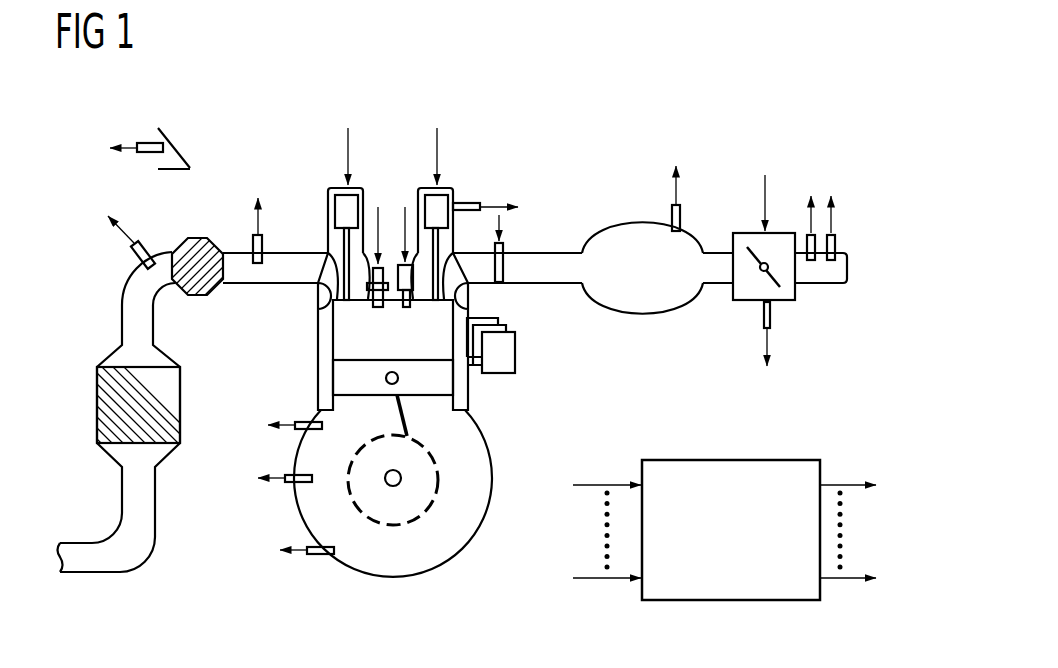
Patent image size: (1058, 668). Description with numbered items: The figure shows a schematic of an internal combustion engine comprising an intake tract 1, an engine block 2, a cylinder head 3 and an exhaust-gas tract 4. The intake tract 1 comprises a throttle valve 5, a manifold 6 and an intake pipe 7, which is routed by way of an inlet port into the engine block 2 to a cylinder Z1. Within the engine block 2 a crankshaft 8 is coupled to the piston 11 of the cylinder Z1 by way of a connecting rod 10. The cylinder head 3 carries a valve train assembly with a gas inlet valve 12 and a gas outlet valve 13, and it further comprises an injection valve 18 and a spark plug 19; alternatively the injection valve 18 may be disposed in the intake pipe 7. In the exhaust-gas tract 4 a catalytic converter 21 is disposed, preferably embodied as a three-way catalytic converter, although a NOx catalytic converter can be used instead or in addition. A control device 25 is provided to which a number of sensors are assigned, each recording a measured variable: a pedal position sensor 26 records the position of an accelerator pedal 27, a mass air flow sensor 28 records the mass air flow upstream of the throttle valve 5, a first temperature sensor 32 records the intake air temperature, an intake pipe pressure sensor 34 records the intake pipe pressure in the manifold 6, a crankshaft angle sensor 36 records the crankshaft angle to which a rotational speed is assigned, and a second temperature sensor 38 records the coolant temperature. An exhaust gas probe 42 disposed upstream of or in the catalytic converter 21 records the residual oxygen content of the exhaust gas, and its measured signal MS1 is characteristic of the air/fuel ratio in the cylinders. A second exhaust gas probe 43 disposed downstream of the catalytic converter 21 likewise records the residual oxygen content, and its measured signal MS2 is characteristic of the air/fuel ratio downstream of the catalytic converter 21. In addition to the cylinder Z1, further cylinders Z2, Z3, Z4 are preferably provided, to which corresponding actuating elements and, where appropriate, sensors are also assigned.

The intake tract 1 is at (674, 325).
The engine block 2 is at (296, 338).
The cylinder head 3 is at (458, 156).
The exhaust-gas tract 4 is at (121, 269).
The throttle valve 5 is at (742, 240).
The manifold 6 is at (684, 298).
The intake pipe 7 is at (558, 253).
The crankshaft 8 is at (403, 481).
The connecting rod 10 is at (400, 422).
The piston 11 is at (427, 388).
The gas inlet valve 12 is at (437, 303).
The gas outlet valve 13 is at (318, 312).
The injection valve 18 is at (405, 309).
The spark plug 19 is at (378, 309).
The catalytic converter 21 is at (193, 297).
The control device 25 is at (754, 465).
The pedal position sensor 26 is at (147, 142).
The accelerator pedal 27 is at (180, 140).
The mass air flow sensor 28 is at (807, 236).
The first temperature sensor 32 is at (836, 244).
The intake pipe pressure sensor 34 is at (672, 212).
The crankshaft angle sensor 36 is at (292, 485).
The second temperature sensor 38 is at (300, 420).
The exhaust gas probe 42 is at (253, 244).
The second exhaust gas probe 43 is at (151, 244).
The cylinder Z1 is at (462, 383).
The further cylinder Z2 is at (505, 357).
The further cylinder Z3 is at (507, 328).
The further cylinder Z4 is at (497, 318).
The measured signal MS1 is at (251, 202).
The measured signal MS2 is at (107, 215).